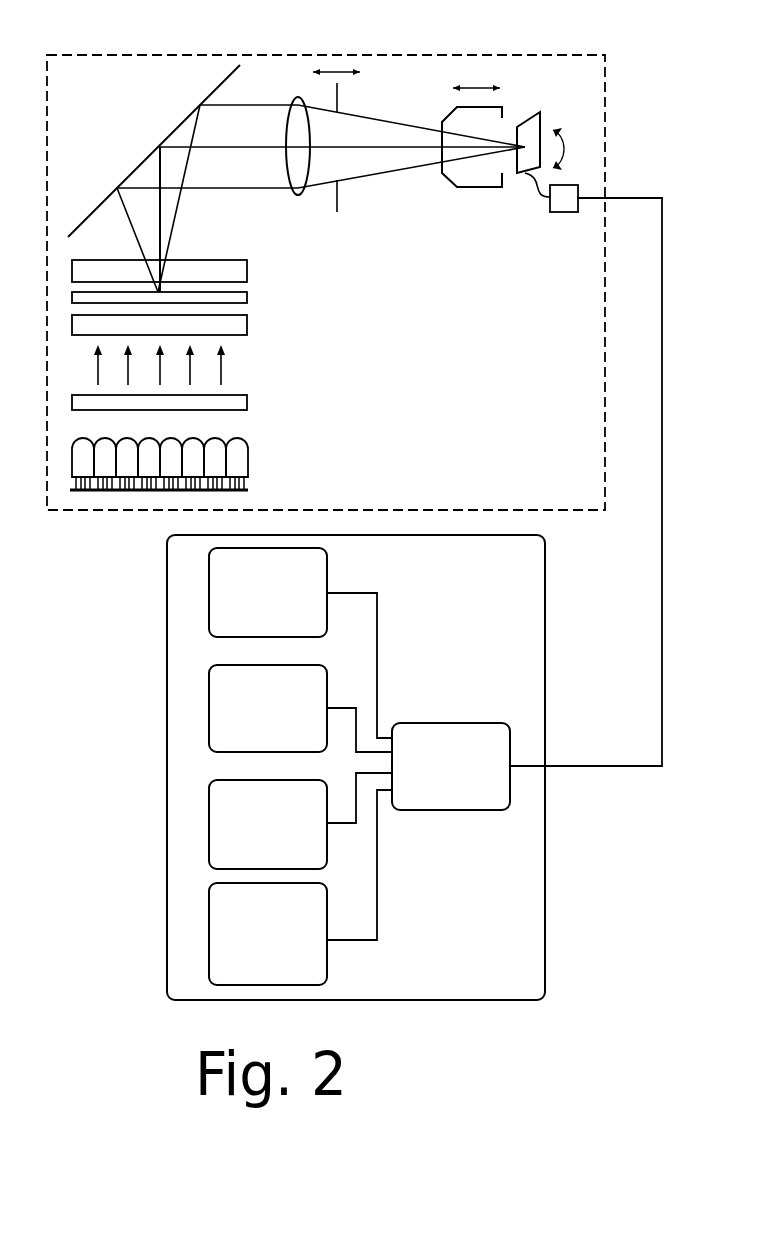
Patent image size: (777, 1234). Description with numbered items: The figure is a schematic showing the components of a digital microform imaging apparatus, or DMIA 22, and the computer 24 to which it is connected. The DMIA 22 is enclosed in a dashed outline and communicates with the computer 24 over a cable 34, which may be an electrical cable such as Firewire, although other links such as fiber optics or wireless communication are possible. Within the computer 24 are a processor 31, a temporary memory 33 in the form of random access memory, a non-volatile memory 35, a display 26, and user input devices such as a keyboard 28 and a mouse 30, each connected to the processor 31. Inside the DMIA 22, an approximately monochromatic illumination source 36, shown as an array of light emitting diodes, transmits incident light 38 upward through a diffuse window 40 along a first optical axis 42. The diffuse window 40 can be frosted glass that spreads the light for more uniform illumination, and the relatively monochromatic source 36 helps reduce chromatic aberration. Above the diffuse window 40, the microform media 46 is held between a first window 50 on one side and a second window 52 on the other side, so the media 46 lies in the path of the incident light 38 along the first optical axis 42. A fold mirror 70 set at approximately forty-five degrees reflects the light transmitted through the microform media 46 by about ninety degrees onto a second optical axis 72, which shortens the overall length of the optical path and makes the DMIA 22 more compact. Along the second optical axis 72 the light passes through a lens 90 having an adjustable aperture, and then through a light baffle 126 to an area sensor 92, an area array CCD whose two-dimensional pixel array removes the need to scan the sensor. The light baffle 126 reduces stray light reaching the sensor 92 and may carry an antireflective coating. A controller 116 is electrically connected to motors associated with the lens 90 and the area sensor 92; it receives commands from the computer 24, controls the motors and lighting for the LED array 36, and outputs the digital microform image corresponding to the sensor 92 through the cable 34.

The digital microform imaging apparatus (DMIA) 22 is at (88, 55).
The computer 24 is at (167, 577).
The display 26 is at (209, 823).
The keyboard 28 is at (240, 887).
The mouse 30 is at (209, 933).
The processor 31 is at (510, 738).
The temporary memory 33 is at (209, 617).
The cable 34 is at (663, 608).
The non-volatile memory 35 is at (209, 727).
The illumination source 36 is at (247, 490).
The incident light 38 is at (222, 362).
The diffuse window 40 is at (247, 402).
The first optical axis 42 is at (160, 175).
The microform media 46 is at (247, 300).
The first window 50 is at (247, 327).
The second window 52 is at (247, 272).
The fold mirror 70 is at (178, 127).
The second optical axis 72 is at (241, 147).
The lens 90 is at (292, 100).
The area sensor 92 is at (537, 122).
The controller 116 is at (564, 212).
The light baffle 126 is at (456, 113).